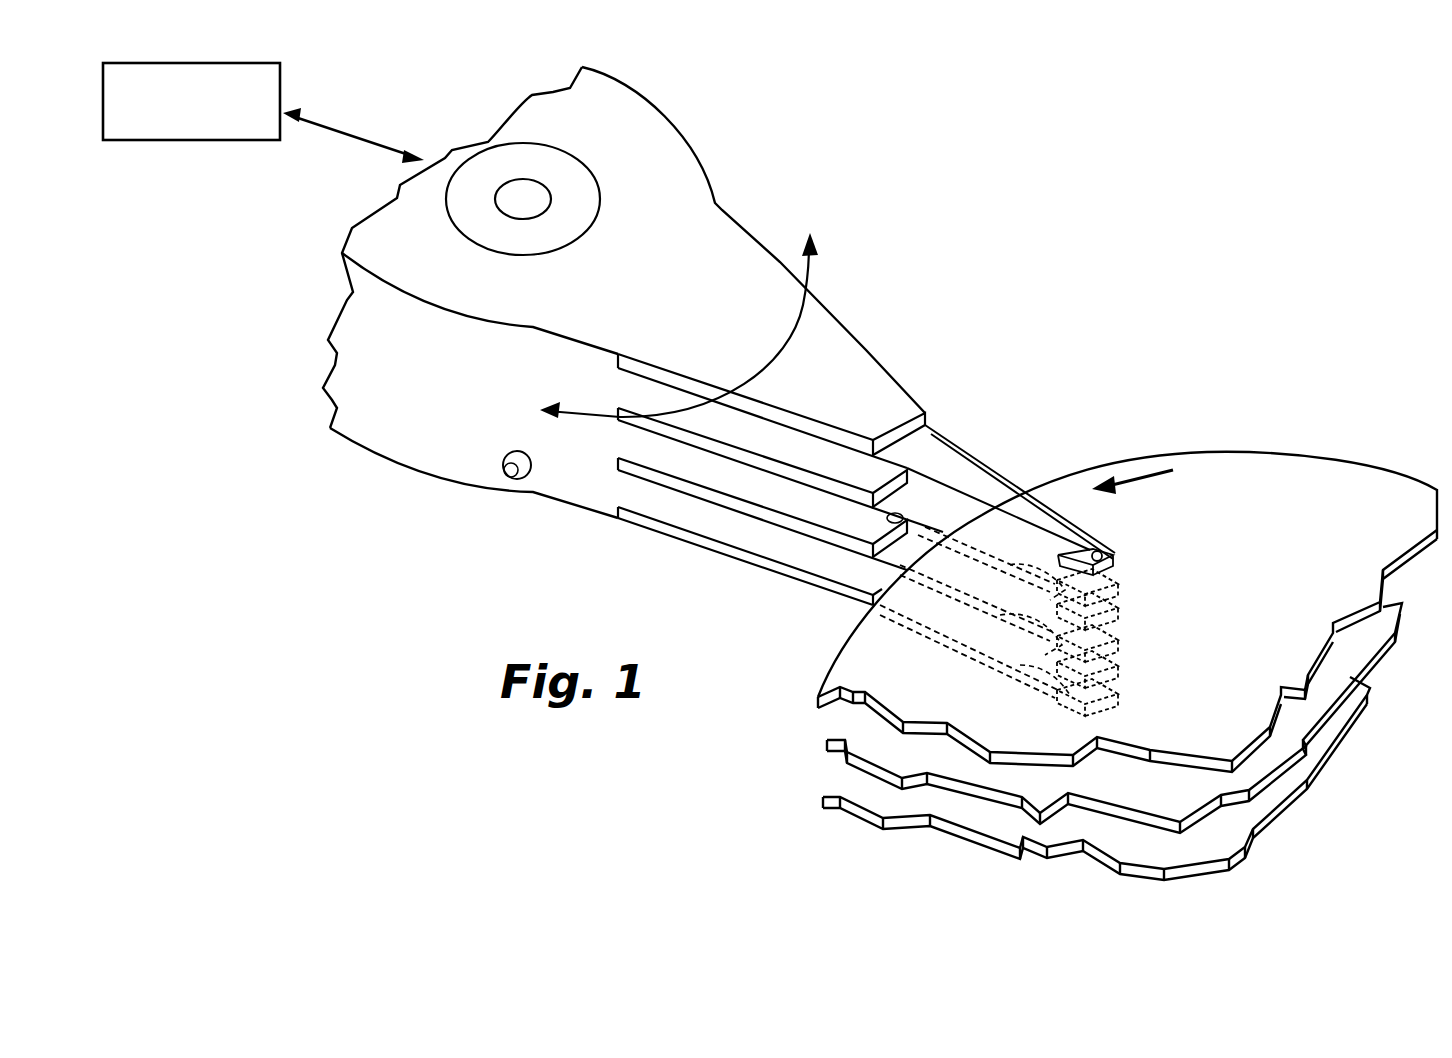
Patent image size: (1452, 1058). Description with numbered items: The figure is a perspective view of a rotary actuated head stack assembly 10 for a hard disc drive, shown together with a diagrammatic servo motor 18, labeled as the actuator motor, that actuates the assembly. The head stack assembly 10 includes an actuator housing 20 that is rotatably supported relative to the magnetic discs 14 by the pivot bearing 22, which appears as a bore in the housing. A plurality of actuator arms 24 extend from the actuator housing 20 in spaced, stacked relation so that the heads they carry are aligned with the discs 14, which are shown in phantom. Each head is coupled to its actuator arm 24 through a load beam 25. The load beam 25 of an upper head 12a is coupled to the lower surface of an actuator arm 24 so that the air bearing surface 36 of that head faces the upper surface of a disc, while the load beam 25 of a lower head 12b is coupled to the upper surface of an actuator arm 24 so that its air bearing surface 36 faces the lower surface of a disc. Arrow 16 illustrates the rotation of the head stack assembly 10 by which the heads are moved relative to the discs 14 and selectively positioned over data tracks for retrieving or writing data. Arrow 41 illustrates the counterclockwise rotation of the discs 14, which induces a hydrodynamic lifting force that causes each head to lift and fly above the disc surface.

The head stack assembly 10 is at (795, 404).
The upper head 12a is at (1162, 613).
The lower head 12b is at (1151, 648).
The magnetic discs 14 is at (1188, 455).
The arrow 16 is at (817, 268).
The servo motor 18 is at (230, 87).
The actuator housing 20 is at (358, 425).
The pivot bearing bore 22 is at (575, 183).
The actuator arms 24 is at (878, 384).
The load beams 25 is at (948, 462).
The air bearing surface 36 is at (1063, 577).
The arrow 41 is at (1130, 472).